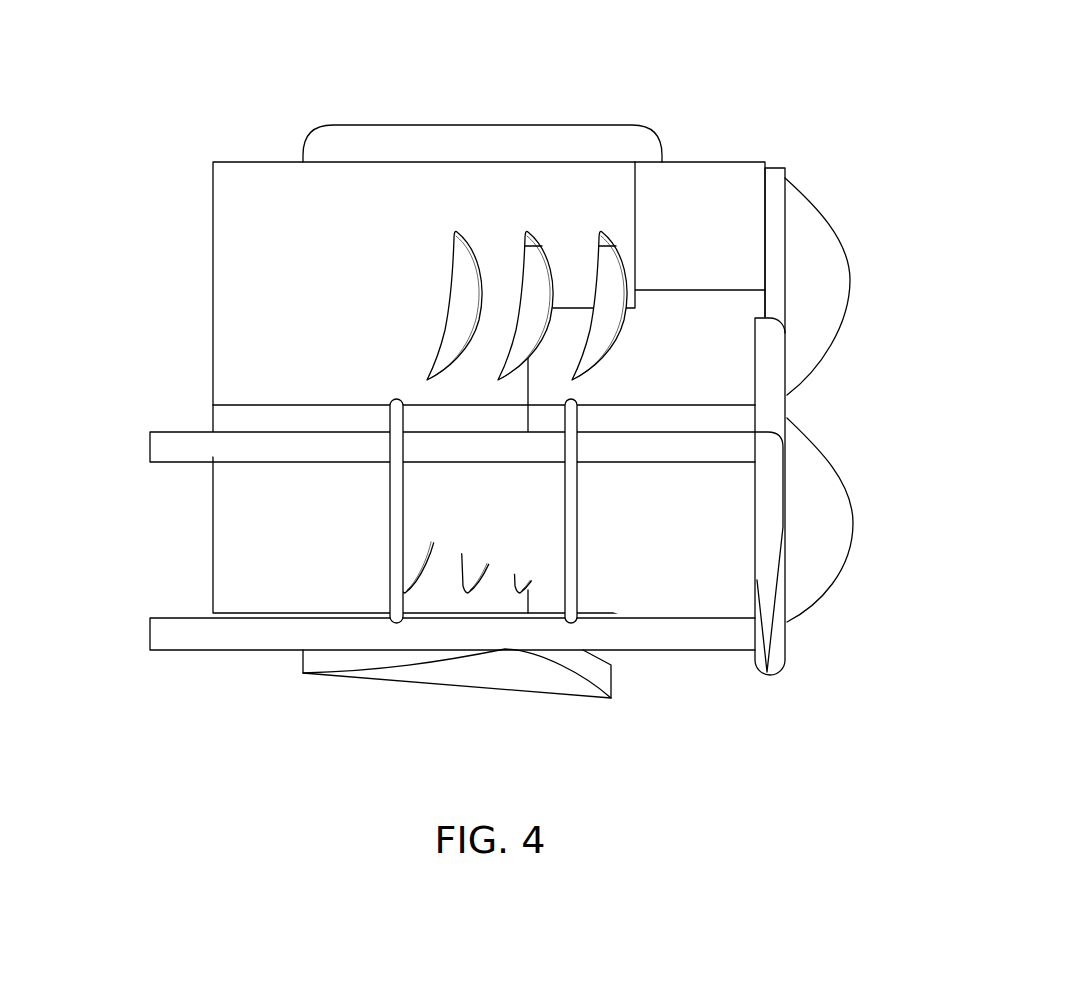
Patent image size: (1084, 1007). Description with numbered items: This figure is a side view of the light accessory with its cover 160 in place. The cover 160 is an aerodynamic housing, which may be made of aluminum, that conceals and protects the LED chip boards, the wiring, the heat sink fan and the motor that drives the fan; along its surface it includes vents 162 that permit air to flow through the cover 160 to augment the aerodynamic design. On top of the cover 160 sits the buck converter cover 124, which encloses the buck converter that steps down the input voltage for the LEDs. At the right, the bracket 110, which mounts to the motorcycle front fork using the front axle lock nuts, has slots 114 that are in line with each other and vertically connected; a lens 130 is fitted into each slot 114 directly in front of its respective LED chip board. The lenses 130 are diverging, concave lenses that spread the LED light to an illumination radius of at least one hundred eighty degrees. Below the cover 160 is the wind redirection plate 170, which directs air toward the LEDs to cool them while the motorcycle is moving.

The bracket 110 is at (168, 632).
The slot 114 is at (775, 172).
The buck converter cover 124 is at (457, 124).
The lens 130 is at (850, 257).
The cover 160 is at (243, 284).
The vent 162 is at (538, 236).
The wind redirection plate 170 is at (520, 695).